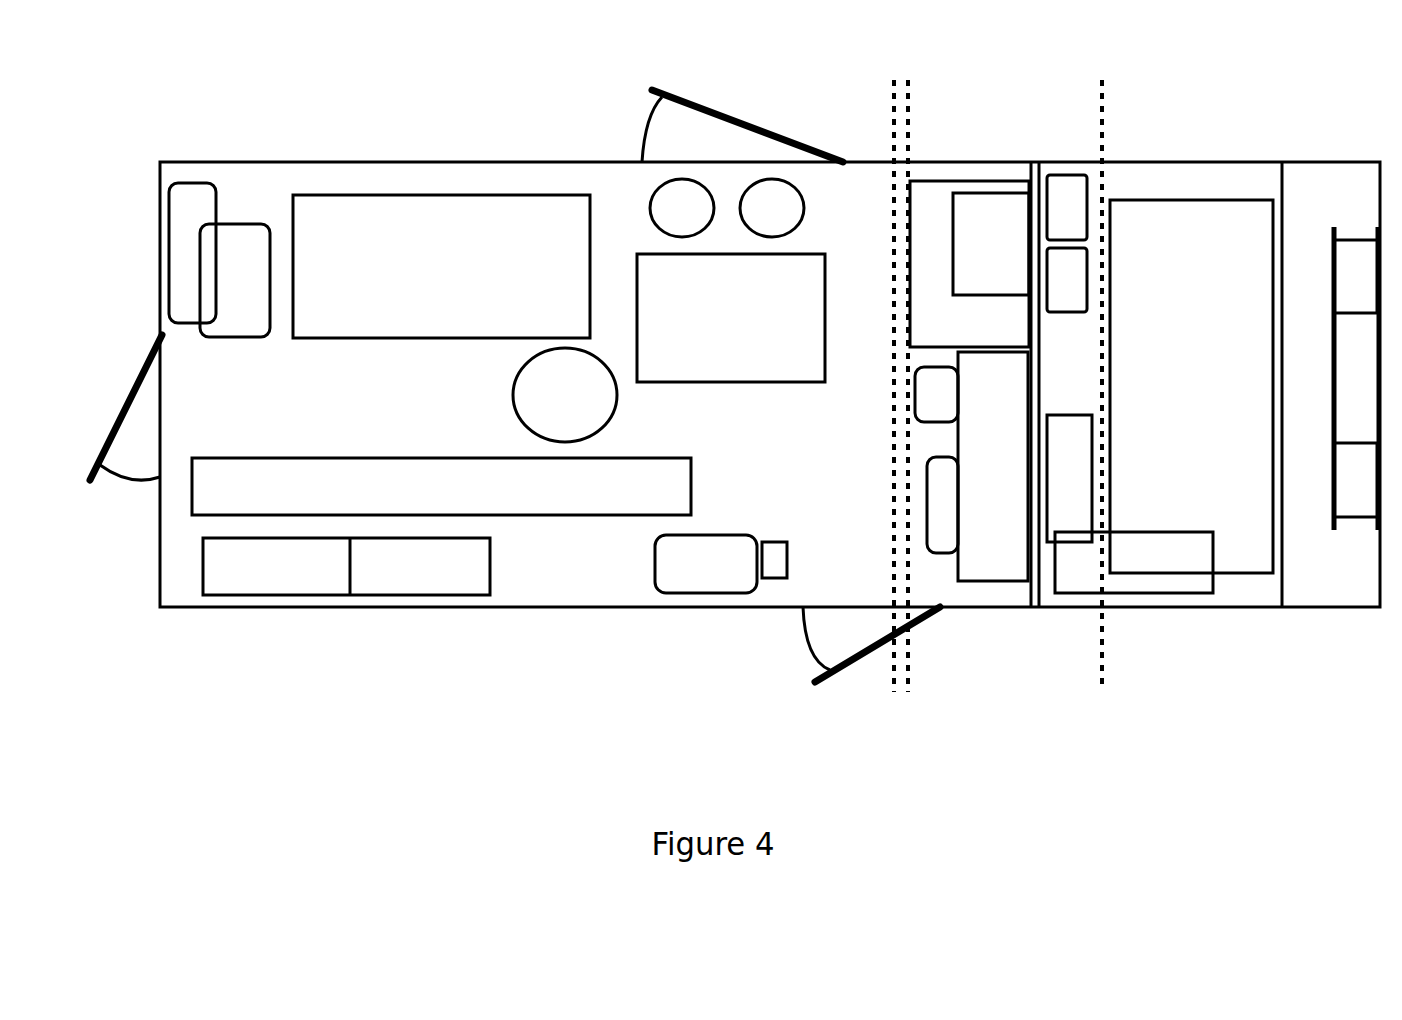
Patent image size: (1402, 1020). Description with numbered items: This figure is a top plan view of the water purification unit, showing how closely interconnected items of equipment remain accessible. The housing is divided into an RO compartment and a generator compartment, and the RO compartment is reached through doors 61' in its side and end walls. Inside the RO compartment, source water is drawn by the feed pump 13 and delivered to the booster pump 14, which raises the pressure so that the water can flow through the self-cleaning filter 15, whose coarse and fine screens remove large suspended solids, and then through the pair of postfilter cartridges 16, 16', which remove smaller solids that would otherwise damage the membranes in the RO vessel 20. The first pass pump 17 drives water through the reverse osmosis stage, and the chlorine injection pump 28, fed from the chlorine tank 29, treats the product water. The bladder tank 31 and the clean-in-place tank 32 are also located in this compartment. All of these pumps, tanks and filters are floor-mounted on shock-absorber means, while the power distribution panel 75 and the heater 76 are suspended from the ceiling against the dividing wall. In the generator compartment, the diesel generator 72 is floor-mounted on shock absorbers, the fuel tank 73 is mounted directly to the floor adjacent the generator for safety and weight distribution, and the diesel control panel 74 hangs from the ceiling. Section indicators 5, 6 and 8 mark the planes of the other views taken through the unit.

The feed pump 13 is at (257, 224).
The booster pump 14 is at (912, 393).
The self-cleaning filter 15 is at (927, 487).
The postfilter cartridge 16 is at (682, 208).
The postfilter cartridge 16' is at (772, 208).
The first pass pump 17 is at (441, 266).
The RO vessel 20 is at (441, 486).
The chlorine injection pump 28 is at (772, 578).
The chlorine tank 29 is at (655, 575).
The bladder tank 31 is at (565, 395).
The clean-in-place tank 32 is at (731, 318).
The doors 61' is at (473, 403).
The diesel generator 72 is at (1191, 386).
The fuel tank 73 is at (1100, 483).
The diesel control panel 74 is at (1203, 593).
The power distribution panel 75 is at (993, 466).
The heater 76 is at (969, 264).
The section line 5 is at (894, 80).
The section line 6- 6 is at (908, 80).
The section line 8 is at (1102, 77).